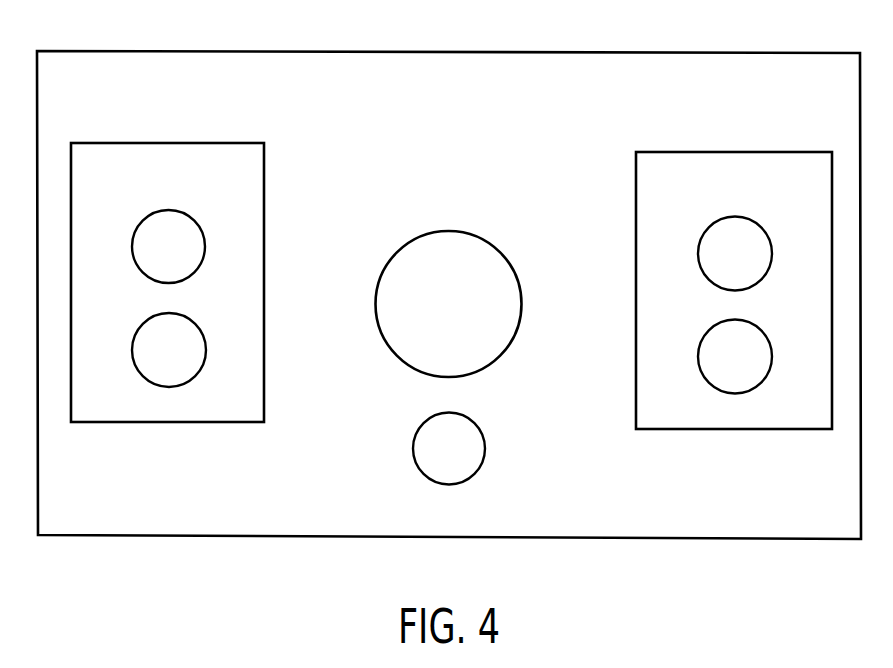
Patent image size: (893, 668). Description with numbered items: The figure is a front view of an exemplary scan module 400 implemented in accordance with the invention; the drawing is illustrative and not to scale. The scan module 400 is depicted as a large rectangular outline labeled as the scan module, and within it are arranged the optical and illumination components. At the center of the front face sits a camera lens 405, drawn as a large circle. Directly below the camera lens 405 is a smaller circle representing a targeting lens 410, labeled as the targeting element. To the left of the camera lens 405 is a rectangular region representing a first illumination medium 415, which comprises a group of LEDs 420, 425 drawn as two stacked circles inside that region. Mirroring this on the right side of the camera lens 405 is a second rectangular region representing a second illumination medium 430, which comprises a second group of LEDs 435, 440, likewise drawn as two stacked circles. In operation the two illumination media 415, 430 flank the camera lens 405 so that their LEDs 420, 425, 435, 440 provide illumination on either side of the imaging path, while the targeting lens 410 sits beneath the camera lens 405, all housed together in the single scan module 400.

The scan module 400 is at (449, 277).
The camera lens 405 is at (462, 286).
The targeting lens 410 is at (488, 466).
The first illumination medium 415 is at (213, 282).
The LED 420 is at (168, 246).
The LED 425 is at (169, 350).
The second illumination medium 430 is at (693, 290).
The LED 435 is at (735, 254).
The LED 440 is at (735, 357).